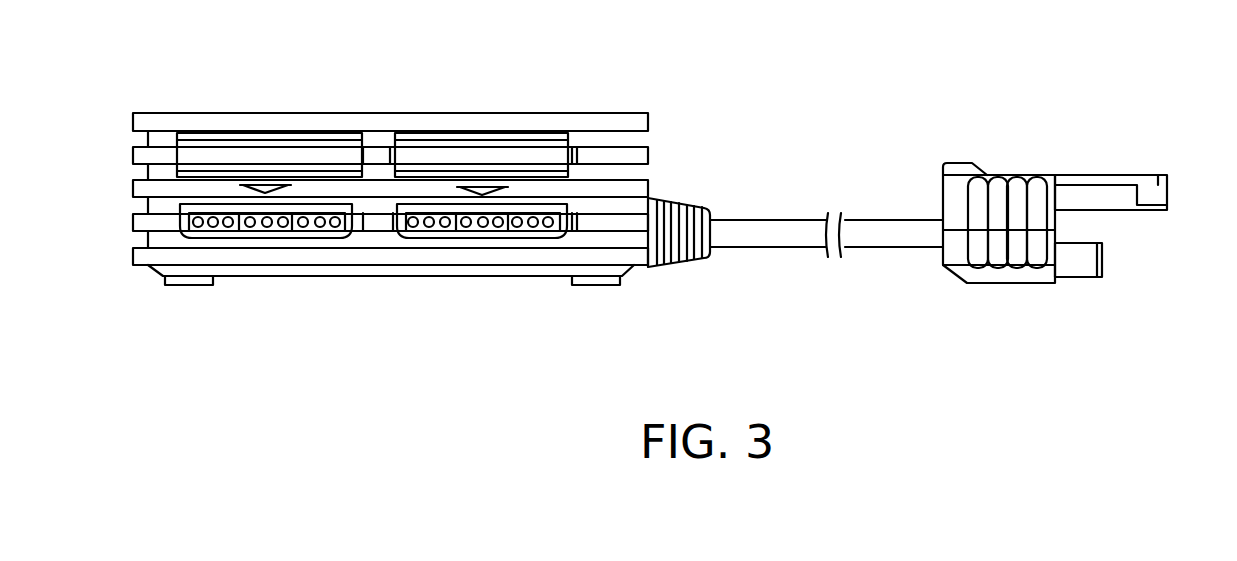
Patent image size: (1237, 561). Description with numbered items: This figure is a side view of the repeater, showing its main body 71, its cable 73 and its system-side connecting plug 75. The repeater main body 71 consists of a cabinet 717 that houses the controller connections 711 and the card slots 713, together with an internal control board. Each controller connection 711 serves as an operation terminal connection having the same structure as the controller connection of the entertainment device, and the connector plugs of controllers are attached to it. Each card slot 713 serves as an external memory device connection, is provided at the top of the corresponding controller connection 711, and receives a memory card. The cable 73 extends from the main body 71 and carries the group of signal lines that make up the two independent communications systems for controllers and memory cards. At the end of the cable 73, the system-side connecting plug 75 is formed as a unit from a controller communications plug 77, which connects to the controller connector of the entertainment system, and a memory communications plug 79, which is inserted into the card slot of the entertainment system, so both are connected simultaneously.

The main body 71 is at (378, 166).
The cabinet 717 is at (147, 120).
The card slot 713 is at (222, 155).
The controller connection 711 is at (267, 228).
The cable 73 is at (768, 225).
The system-side connecting plug 75 is at (1012, 183).
The controller communications plug 77 is at (1092, 258).
The memory communications plug 79 is at (1160, 193).